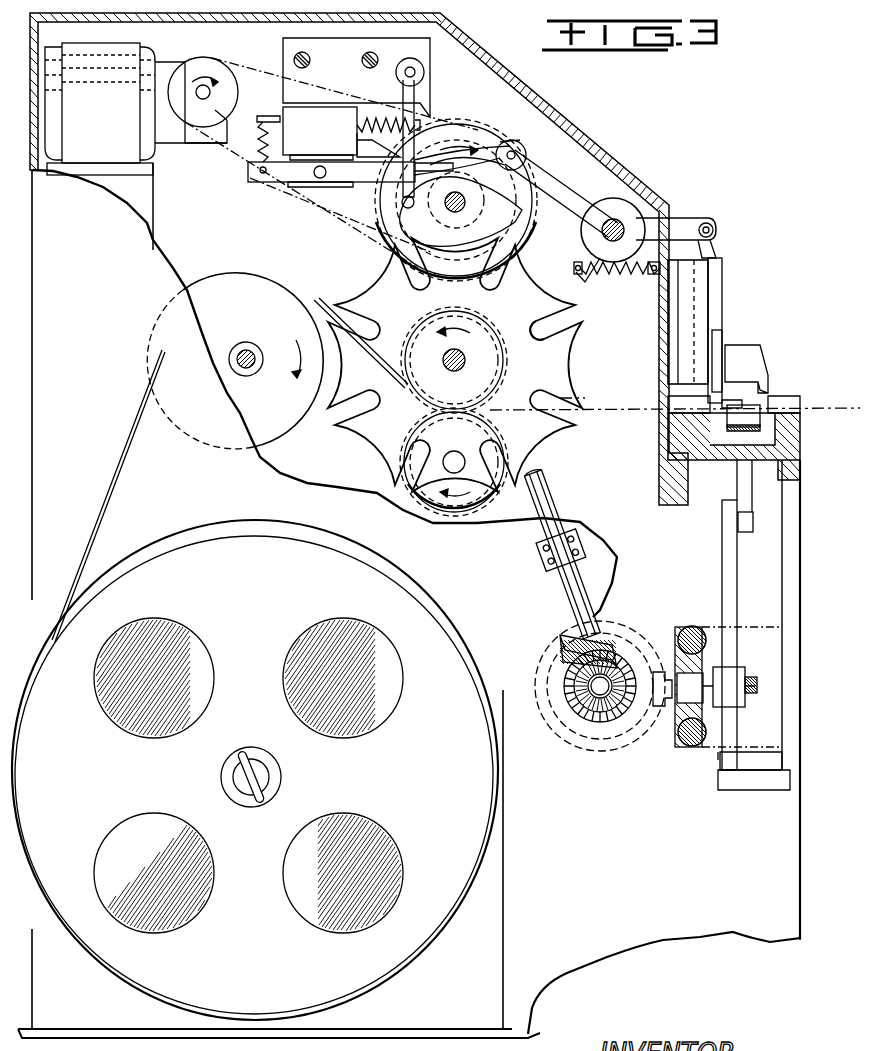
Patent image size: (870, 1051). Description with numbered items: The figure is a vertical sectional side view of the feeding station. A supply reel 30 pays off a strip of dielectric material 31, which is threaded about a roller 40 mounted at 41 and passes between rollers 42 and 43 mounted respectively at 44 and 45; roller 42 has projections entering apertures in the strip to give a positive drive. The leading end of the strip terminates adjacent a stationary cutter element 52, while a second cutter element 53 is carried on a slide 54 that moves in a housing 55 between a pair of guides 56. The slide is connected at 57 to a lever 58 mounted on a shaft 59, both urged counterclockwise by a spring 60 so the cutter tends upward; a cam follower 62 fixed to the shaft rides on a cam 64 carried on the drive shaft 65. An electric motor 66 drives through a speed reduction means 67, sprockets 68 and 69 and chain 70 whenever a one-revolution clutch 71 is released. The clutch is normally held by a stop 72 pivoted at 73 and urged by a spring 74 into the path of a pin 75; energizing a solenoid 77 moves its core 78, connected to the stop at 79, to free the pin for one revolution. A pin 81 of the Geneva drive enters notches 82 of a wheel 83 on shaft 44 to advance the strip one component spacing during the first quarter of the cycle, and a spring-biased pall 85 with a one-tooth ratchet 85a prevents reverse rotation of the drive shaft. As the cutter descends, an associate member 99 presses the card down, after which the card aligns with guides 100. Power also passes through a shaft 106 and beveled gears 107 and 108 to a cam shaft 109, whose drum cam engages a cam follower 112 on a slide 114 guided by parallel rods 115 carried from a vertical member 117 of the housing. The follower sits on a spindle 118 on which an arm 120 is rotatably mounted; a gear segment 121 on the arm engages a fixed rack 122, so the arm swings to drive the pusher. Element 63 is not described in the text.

The supply reel 30 is at (456, 904).
The strip of dielectric material 31 is at (118, 482).
The roller 40 is at (241, 272).
The roller mounting 41 is at (250, 350).
The roller 42 is at (492, 332).
The roller 43 is at (458, 512).
The shaft 44 is at (465, 358).
The roller mounting 45 is at (455, 452).
The stationary cutter element 52 is at (745, 428).
The second cutter element 53 is at (744, 397).
The slide 54 is at (721, 310).
The housing 55 is at (650, 182).
The guides 56 is at (683, 343).
The connection 57 is at (715, 226).
The lever 58 is at (684, 218).
The shaft 59 is at (603, 233).
The spring 60 is at (606, 282).
The cam follower 62 is at (522, 146).
The link 63 is at (565, 180).
The cam 64 is at (468, 138).
The drive shaft 65 is at (451, 209).
The electric motor 66 is at (82, 150).
The speed reduction means 67 is at (163, 72).
The sprocket 68 is at (216, 66).
The sprocket 69 is at (490, 134).
The chain 70 is at (260, 72).
The one-revolution clutch 71 is at (522, 176).
The stop 72 is at (392, 177).
The pivot 73 is at (398, 76).
The spring 74 is at (358, 119).
The pin 75 is at (400, 202).
The solenoid 77 is at (312, 112).
The solenoid core 78 is at (358, 140).
The connection 79 is at (448, 130).
The pin 81 is at (455, 357).
The notches 82 is at (555, 322).
The wheel 83 is at (566, 386).
The spring-biased pall 85 is at (335, 182).
The one-tooth ratchet 85a is at (511, 148).
The associate member 99 is at (764, 380).
The guides 100 is at (788, 396).
The shaft 106 is at (568, 598).
The beveled gear 107 is at (560, 668).
The beveled gear 108 is at (572, 692).
The cam shaft 109 is at (596, 700).
The cam follower 112 is at (664, 670).
The slide 114 is at (682, 712).
The parallel rods 115 is at (693, 630).
The vertical member 117 is at (782, 558).
The spindle 118 is at (752, 678).
The arm 120 is at (740, 596).
The gear segment 121 is at (722, 760).
The rack 122 is at (725, 792).